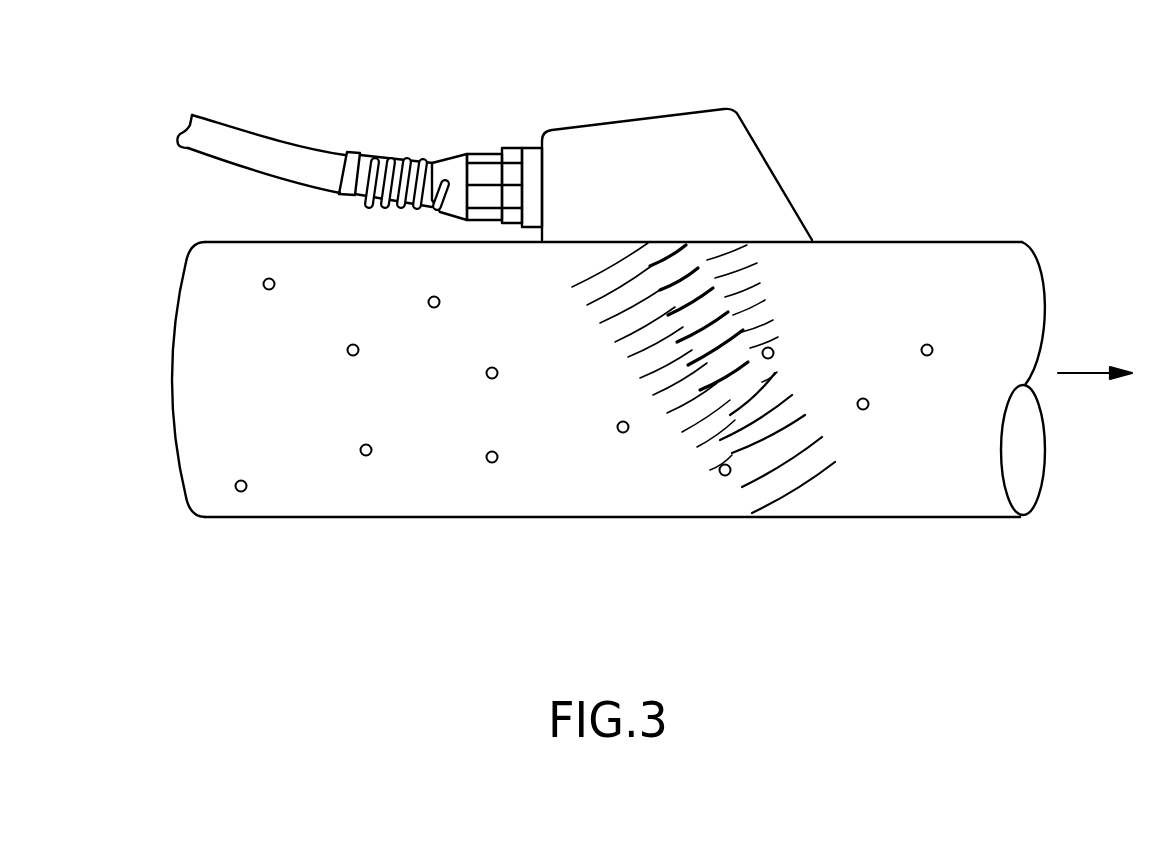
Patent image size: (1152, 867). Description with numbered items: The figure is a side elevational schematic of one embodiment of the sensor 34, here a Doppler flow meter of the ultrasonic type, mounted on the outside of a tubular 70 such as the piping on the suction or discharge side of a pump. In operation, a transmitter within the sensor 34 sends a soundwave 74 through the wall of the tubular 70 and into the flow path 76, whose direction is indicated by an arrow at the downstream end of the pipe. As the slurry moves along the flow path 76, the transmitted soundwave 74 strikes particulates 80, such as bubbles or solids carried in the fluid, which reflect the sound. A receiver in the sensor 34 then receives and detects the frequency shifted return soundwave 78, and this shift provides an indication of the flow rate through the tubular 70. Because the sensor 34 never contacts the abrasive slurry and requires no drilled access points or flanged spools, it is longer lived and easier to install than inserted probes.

The sensor 34 is at (752, 100).
The tubular 70 is at (1022, 240).
The soundwave 74 is at (805, 500).
The flow path 76 is at (1083, 373).
The return soundwave 78 is at (588, 296).
The particulates 80 is at (719, 465).